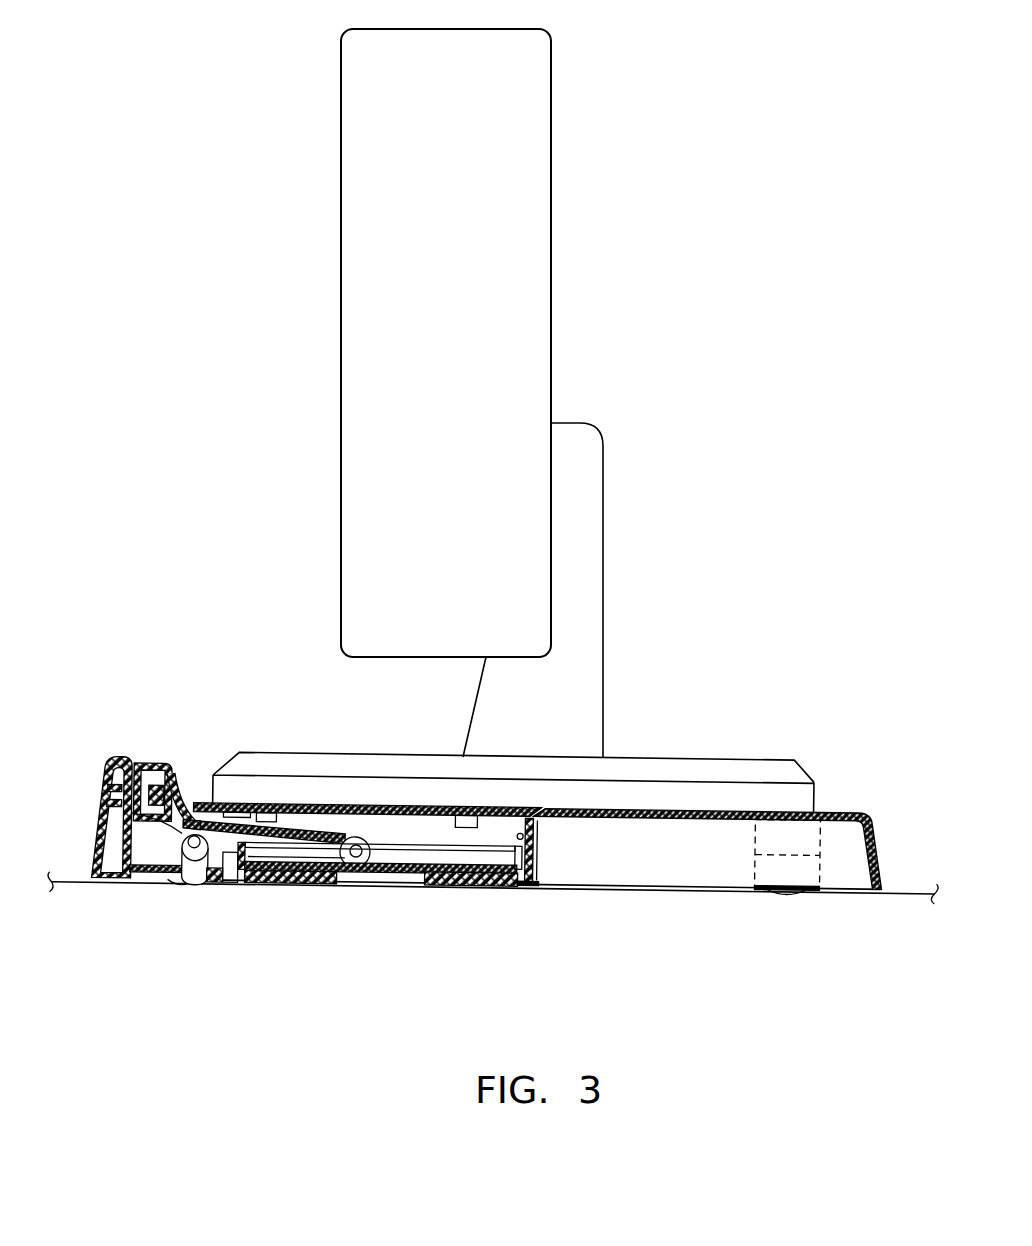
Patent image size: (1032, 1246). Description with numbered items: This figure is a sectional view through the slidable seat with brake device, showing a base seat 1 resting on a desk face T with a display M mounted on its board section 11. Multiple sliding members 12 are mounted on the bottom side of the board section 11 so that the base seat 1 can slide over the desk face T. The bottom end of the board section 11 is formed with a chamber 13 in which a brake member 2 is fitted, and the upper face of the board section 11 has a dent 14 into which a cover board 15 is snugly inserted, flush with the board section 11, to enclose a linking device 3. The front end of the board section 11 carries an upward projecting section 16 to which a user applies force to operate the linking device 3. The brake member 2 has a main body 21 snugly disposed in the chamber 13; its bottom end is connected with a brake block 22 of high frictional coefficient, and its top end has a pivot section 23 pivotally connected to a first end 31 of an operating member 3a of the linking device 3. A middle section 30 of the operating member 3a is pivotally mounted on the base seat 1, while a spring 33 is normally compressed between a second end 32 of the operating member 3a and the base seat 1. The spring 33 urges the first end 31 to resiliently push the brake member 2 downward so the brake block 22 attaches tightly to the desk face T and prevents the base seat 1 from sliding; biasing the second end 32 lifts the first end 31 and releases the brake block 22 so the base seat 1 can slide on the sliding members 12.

The display M is at (342, 284).
The desk face T is at (898, 893).
The base seat 1 is at (836, 812).
The board section 11 is at (677, 812).
The sliding members 12 is at (177, 886).
The chamber 13 is at (533, 840).
The dent 14 is at (528, 806).
The cover board 15 is at (407, 807).
The upward projecting section 16 is at (118, 768).
The brake member 2 is at (532, 961).
The main body 21 is at (504, 887).
The brake block 22 is at (458, 888).
The pivot section 23 is at (358, 856).
The linking device 3 is at (307, 823).
The operating member 3a is at (185, 822).
The middle section 30 is at (203, 894).
The first end 31 is at (365, 830).
The second end 32 is at (169, 772).
The spring 33 is at (146, 787).